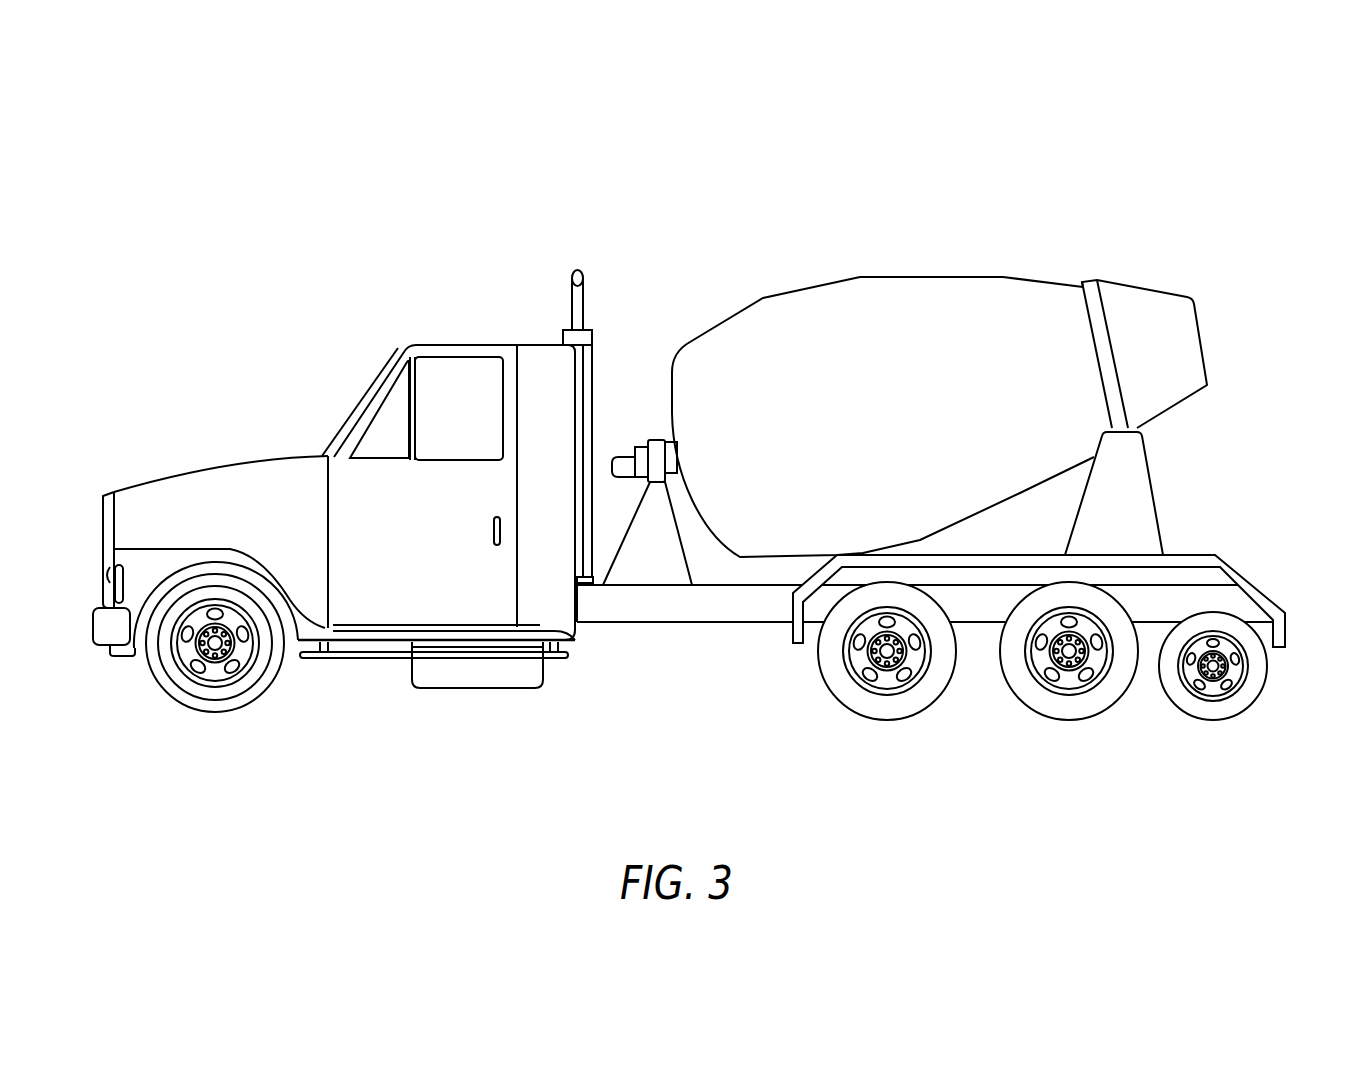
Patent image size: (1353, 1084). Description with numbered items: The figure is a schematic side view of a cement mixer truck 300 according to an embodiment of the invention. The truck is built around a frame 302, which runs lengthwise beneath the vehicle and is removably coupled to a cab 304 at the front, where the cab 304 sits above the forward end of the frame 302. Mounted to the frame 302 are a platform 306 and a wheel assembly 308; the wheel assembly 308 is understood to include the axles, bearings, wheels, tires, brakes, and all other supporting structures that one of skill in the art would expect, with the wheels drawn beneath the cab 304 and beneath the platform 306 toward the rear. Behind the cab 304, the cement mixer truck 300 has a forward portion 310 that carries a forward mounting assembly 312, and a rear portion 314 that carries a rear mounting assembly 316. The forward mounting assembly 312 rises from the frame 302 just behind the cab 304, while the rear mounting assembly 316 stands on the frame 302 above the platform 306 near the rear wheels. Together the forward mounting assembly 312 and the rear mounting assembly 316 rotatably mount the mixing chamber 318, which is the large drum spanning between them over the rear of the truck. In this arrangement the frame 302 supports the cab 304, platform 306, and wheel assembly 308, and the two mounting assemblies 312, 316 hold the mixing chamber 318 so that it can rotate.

The cement mixer truck 300 is at (234, 140).
The frame 302 is at (625, 620).
The cab 304 is at (210, 493).
The platform 306 is at (1193, 560).
The wheel assembly 308 is at (913, 752).
The forward portion 310 is at (638, 350).
The forward mounting assembly 312 is at (662, 558).
The rear portion 314 is at (1127, 221).
The rear mounting assembly 316 is at (1138, 483).
The mixing chamber 318 is at (803, 308).